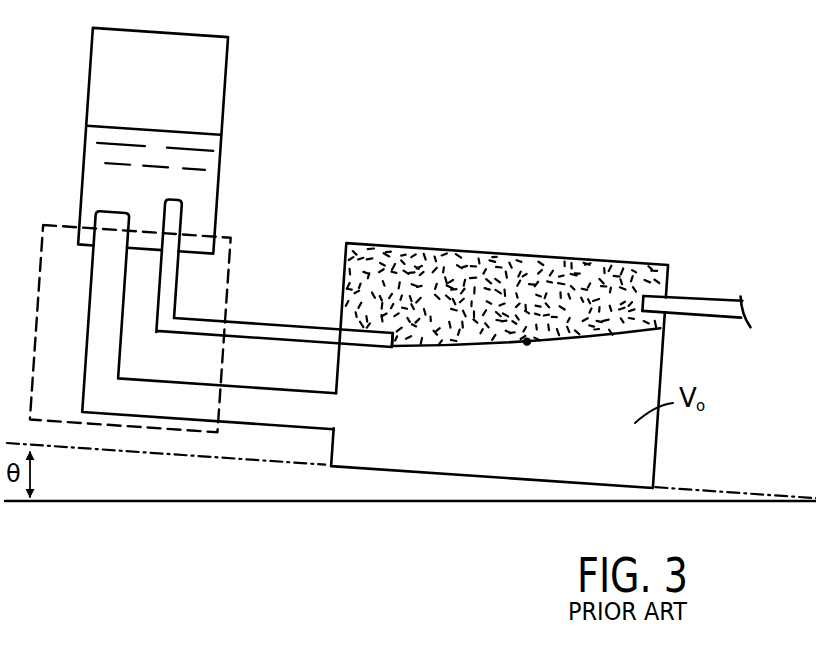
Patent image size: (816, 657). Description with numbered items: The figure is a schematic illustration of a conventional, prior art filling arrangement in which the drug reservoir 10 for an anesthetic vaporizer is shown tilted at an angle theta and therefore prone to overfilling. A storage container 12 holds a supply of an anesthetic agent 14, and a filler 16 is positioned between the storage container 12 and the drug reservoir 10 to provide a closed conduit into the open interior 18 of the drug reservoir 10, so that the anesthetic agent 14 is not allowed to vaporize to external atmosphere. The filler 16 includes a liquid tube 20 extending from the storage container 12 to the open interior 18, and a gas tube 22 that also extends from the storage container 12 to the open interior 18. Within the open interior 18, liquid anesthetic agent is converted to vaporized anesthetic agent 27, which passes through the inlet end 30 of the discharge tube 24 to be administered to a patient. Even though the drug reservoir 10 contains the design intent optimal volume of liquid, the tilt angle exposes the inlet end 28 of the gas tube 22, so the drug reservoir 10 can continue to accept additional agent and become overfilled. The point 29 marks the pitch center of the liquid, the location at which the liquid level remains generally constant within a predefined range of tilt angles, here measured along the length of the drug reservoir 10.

The drug reservoir 10 is at (524, 208).
The storage container 12 is at (226, 92).
The anesthetic agent 14 is at (95, 178).
The filler 16 is at (228, 295).
The open interior 18 is at (427, 260).
The liquid tube 20 is at (148, 380).
The gas tube 22 is at (338, 326).
The discharge tube 24 is at (703, 300).
The vaporized anesthetic agent 27 is at (565, 270).
The inlet end 28 is at (393, 348).
The point 29 is at (527, 346).
The inlet end 30 is at (643, 303).